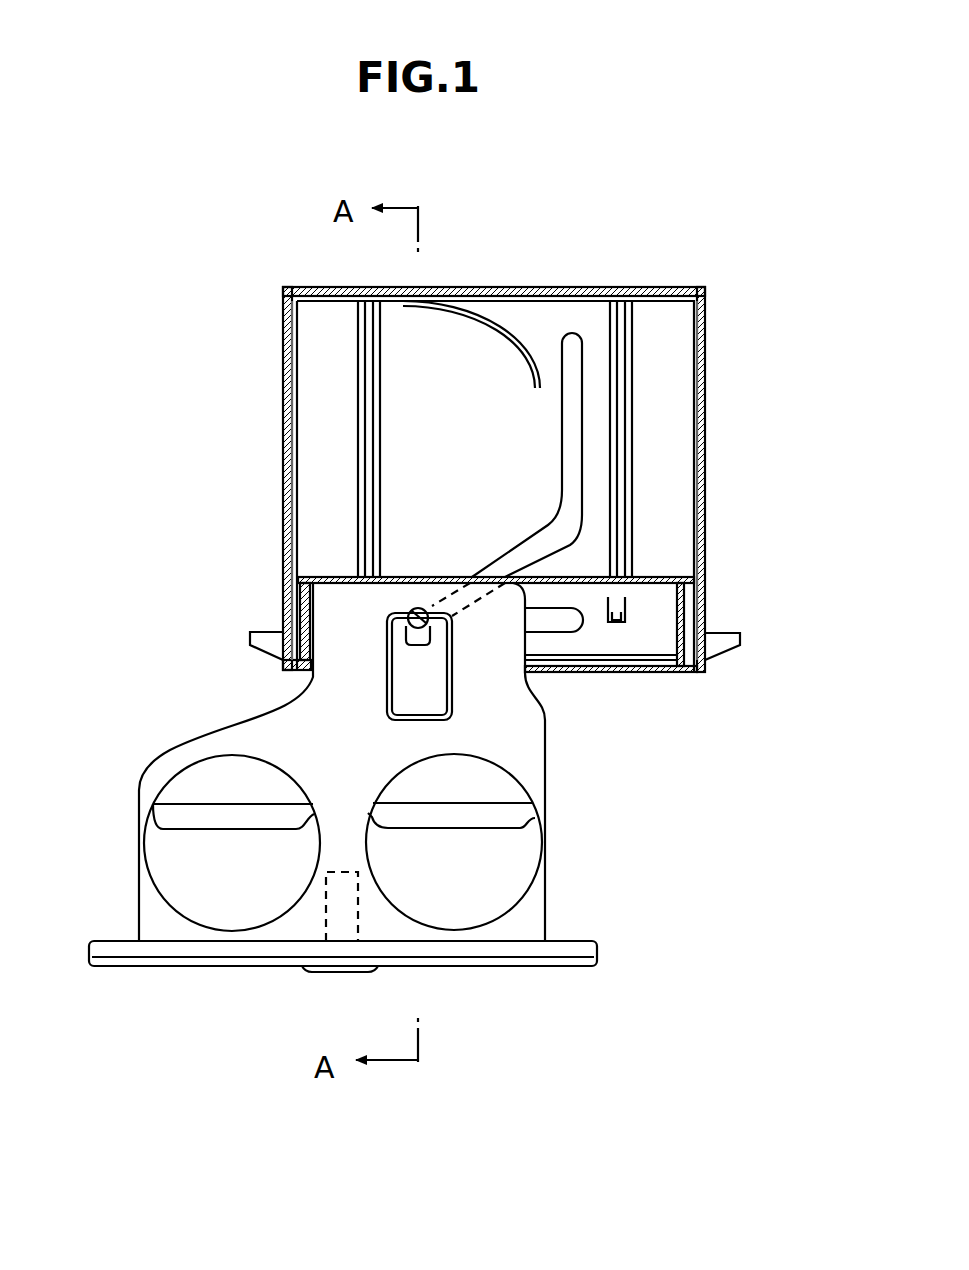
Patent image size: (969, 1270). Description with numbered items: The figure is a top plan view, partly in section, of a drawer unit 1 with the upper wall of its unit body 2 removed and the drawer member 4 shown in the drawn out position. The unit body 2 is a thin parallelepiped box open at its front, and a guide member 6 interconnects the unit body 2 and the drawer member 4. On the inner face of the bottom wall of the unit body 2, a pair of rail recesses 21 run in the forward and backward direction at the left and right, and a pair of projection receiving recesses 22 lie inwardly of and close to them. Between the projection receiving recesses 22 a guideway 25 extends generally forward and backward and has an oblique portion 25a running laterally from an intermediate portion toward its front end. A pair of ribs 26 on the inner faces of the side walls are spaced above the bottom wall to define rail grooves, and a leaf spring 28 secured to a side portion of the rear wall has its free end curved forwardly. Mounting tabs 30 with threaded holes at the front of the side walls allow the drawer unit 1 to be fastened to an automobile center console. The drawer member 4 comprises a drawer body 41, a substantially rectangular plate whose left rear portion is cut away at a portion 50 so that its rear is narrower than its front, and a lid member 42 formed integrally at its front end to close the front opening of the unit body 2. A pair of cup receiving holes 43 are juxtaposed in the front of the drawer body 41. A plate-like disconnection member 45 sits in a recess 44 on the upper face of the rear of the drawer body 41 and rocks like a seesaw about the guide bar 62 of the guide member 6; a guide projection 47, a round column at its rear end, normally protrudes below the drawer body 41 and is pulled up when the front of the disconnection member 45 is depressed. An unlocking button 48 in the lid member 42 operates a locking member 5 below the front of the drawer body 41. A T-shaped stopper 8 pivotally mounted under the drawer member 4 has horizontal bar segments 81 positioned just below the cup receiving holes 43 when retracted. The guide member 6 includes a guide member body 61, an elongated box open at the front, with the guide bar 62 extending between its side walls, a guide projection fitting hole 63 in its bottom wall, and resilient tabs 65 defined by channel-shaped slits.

The drawer unit 1 is at (642, 228).
The unit body 2 is at (684, 288).
The drawer member 4 is at (556, 773).
The locking member 5 is at (325, 905).
The guide member 6 is at (664, 574).
The stopper 8 is at (250, 800).
The rail recesses 21 is at (352, 342).
The projection receiving recesses 22 is at (395, 342).
The guideway 25 is at (582, 468).
The oblique portion 25a is at (548, 540).
The ribs 26 is at (295, 392).
The leaf spring 28 is at (482, 330).
The mounting tabs 30 is at (285, 663).
The drawer body 41 is at (258, 735).
The lid member 42 is at (537, 958).
The cup receiving holes 43 is at (165, 862).
The recess 44 is at (435, 688).
The disconnection member 45 is at (290, 682).
The guide projection 47 is at (412, 608).
The unlocking button 48 is at (335, 972).
The cut-away portion 50 is at (248, 696).
The guide member body 61 is at (663, 612).
The guide bar 62 is at (665, 662).
The guide projection fitting hole 63 is at (563, 622).
The resilient tabs 65 is at (617, 626).
The horizontal bar segments 81 is at (183, 816).